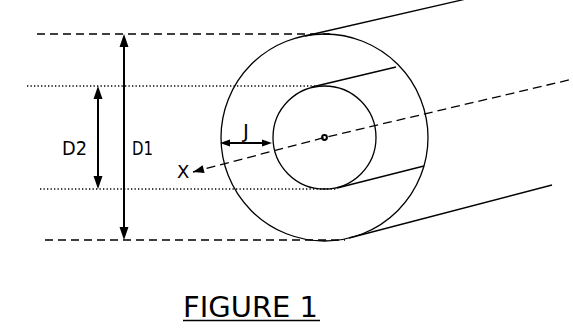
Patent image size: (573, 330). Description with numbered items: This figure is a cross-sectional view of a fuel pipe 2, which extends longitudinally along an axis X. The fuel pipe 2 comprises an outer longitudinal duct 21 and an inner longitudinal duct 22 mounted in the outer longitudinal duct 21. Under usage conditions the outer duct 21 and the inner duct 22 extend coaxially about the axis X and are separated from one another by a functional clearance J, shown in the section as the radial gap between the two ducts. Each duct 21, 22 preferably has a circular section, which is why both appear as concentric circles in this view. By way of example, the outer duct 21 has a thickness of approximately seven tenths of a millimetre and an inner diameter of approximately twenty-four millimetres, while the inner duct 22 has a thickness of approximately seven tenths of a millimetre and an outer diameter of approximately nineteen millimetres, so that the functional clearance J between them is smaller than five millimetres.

The fuel pipe 2 is at (386, 120).
The outer longitudinal duct 21 is at (385, 56).
The inner longitudinal duct 22 is at (365, 103).